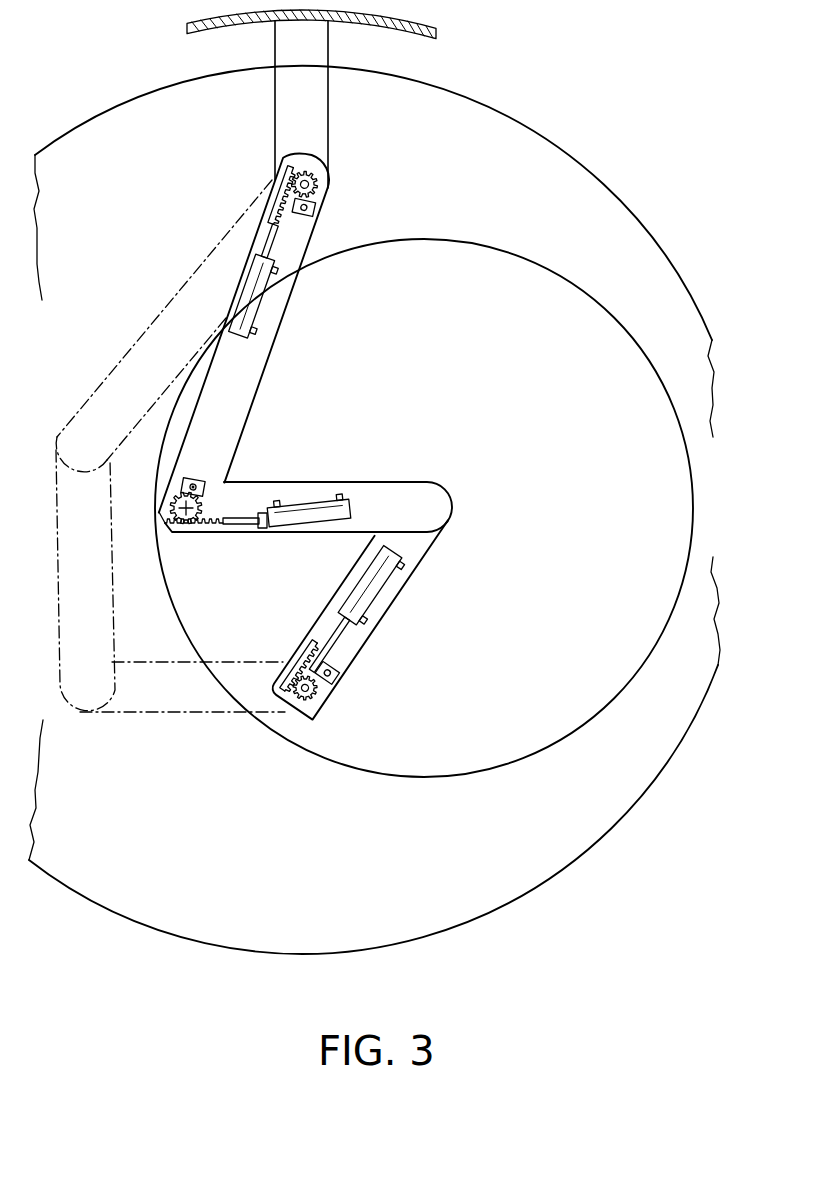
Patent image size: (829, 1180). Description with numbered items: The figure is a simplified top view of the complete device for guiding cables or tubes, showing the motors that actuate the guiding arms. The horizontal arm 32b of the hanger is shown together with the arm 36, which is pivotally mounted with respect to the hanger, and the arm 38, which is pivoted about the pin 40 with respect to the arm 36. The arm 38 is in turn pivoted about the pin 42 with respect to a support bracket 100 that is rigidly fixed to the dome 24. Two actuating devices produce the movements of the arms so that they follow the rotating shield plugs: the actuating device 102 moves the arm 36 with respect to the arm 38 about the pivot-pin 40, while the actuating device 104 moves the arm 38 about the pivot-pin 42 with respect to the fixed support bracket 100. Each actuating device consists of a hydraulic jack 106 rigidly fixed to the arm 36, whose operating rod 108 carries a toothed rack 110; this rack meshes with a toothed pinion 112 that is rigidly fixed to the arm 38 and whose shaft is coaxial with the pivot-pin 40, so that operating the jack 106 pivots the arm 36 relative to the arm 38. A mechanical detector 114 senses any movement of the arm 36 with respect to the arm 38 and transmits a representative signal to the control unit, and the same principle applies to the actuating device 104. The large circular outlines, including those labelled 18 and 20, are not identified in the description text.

The inner disc 18 is at (620, 333).
The outer ring 20 is at (548, 140).
The dome 24 is at (425, 37).
The horizontal arm 32b is at (352, 642).
The arm 36 is at (423, 484).
The arm 38 is at (228, 356).
The pin 40 is at (178, 499).
The pin 42 is at (318, 186).
The support bracket 100 is at (277, 133).
The actuating device 102 is at (308, 537).
The actuating device 104 is at (257, 283).
The hydraulic jack 106 is at (335, 506).
The operating rod 108 is at (250, 510).
The toothed rack 110 is at (220, 524).
The toothed pinion 112 is at (163, 516).
The mechanical detector 114 is at (192, 478).